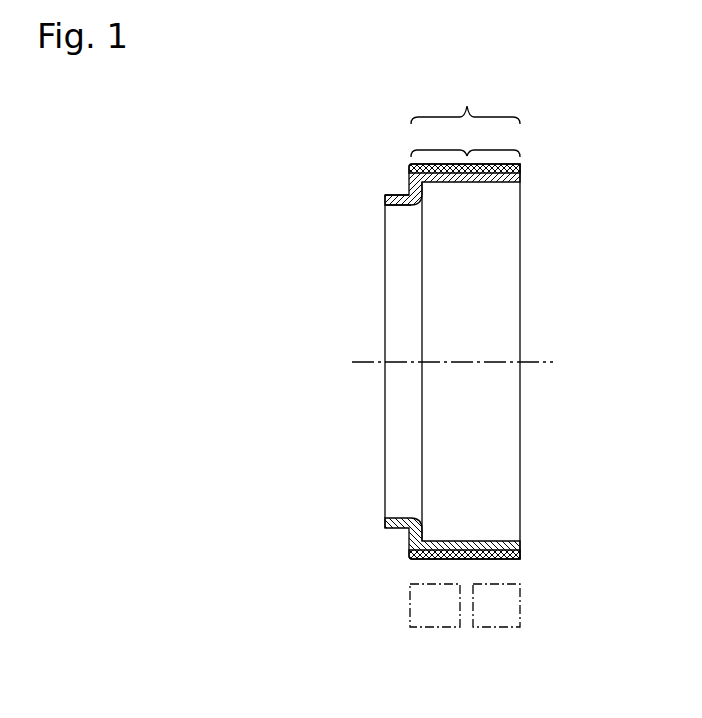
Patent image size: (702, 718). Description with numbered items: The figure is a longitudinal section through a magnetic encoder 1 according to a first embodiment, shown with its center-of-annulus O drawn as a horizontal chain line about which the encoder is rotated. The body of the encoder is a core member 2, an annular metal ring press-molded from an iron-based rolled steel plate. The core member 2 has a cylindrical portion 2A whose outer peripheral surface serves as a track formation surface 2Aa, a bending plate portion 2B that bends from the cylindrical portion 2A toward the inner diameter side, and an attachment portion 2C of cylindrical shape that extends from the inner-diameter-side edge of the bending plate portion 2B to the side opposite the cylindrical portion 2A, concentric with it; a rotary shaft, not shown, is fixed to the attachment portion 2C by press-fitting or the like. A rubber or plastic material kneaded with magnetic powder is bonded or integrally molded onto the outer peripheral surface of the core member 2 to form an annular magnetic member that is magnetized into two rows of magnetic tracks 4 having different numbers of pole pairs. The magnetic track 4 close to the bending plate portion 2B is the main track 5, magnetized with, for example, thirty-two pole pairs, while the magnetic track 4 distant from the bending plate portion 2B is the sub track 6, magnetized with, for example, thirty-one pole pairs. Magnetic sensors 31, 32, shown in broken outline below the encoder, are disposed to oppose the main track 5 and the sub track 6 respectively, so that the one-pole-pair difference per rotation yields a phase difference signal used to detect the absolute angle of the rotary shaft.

The magnetic encoder 1 is at (352, 180).
The core member 2 is at (483, 535).
The cylindrical portion 2A is at (504, 173).
The track formation surface 2Aa is at (515, 163).
The bending plate portion 2B is at (422, 192).
The attachment portion 2C is at (397, 205).
The magnetic tracks 4 is at (465, 99).
The main track 5 is at (439, 138).
The sub track 6 is at (493, 138).
The magnetic sensor 31 is at (420, 605).
The magnetic sensor 32 is at (488, 617).
The center-of-annulus O is at (537, 363).